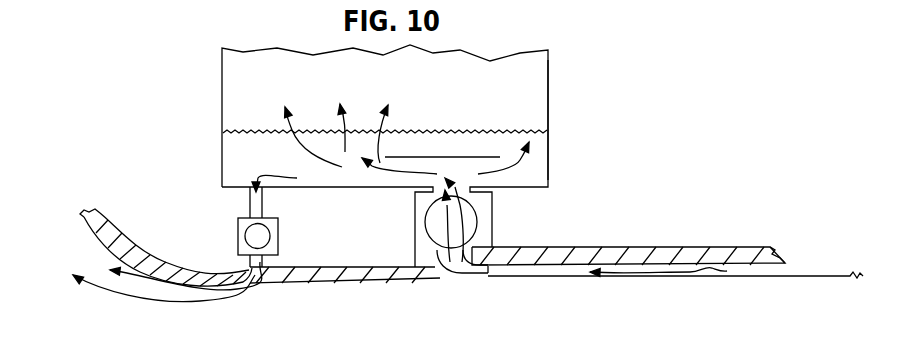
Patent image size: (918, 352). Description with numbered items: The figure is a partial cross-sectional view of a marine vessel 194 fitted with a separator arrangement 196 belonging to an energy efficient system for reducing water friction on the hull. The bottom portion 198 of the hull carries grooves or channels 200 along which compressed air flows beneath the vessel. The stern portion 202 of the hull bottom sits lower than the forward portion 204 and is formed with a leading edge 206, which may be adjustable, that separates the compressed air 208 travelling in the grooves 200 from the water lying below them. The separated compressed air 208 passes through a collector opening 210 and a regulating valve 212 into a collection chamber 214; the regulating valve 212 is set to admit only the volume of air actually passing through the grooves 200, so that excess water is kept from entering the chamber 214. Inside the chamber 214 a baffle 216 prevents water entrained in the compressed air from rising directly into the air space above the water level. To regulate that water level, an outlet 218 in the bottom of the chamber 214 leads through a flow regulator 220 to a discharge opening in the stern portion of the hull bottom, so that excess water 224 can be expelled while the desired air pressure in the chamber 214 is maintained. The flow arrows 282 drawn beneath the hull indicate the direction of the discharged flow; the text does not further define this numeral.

The marine vessel 194 is at (645, 133).
The separator arrangement 196 is at (499, 44).
The bottom portion of the hull 198 is at (92, 238).
The grooves or channels 200 is at (735, 277).
The stern portion of the bottom of the hull 202 is at (270, 283).
The portion of the hull bottom 204 is at (637, 248).
The leading edge 206 is at (470, 278).
The compressed air 208 is at (785, 266).
The collector opening 210 is at (480, 277).
The regulating valve 212 is at (433, 222).
The collection chamber 214 is at (548, 87).
The baffle 216 is at (483, 157).
The outlet 218 is at (249, 207).
The flow regulator 220 is at (247, 240).
The excess water 224 is at (252, 168).
The flow direction arrows 282 is at (250, 292).